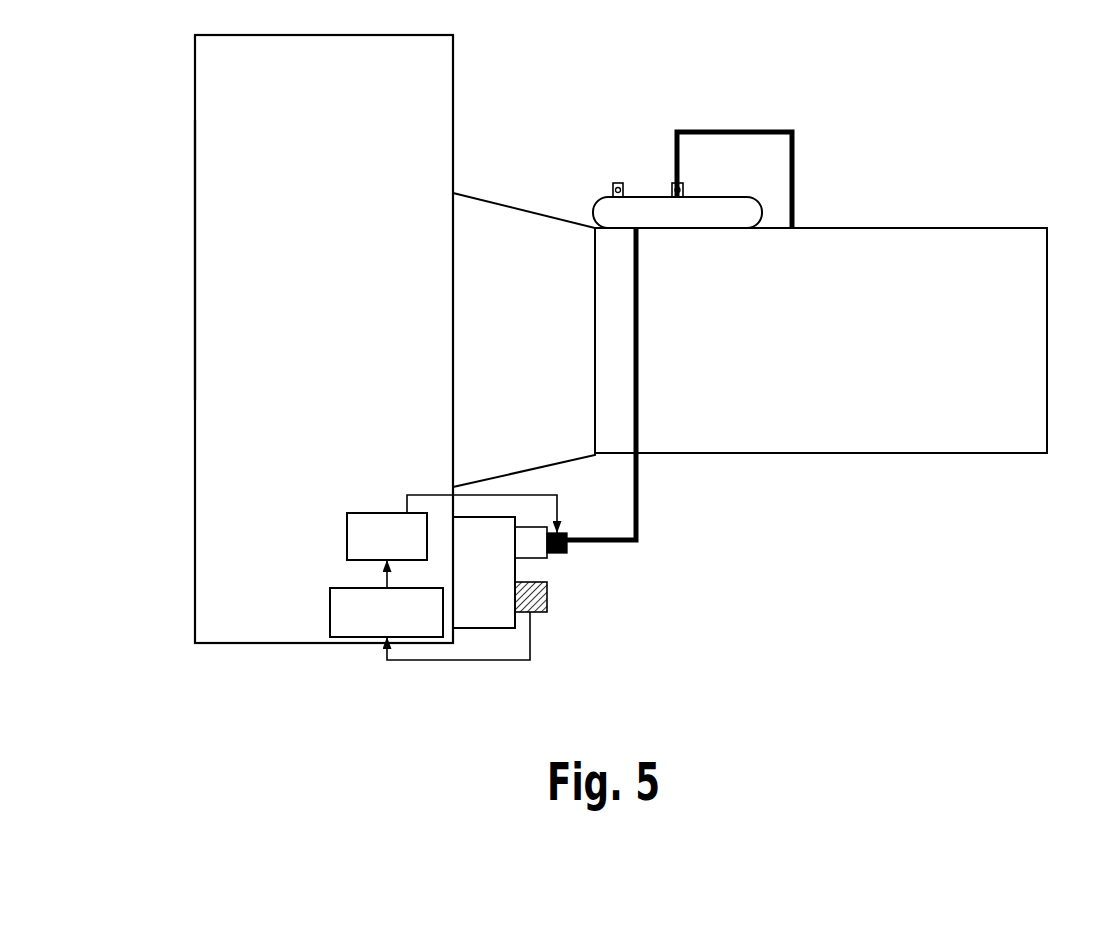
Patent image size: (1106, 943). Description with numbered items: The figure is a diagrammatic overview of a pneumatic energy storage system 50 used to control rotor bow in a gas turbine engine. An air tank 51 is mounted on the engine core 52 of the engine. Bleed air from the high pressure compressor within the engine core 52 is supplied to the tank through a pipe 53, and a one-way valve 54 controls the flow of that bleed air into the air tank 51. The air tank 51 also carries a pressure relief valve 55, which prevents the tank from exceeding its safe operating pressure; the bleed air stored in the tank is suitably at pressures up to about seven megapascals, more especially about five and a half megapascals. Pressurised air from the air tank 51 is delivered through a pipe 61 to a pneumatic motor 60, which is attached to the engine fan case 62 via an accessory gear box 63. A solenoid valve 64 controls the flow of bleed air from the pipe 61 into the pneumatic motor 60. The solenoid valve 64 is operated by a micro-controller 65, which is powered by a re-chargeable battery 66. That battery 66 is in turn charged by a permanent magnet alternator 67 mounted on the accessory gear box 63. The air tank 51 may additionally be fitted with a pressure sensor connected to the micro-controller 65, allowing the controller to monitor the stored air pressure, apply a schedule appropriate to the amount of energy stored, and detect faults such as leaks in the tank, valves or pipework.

The pneumatic energy storage system 50 is at (172, 158).
The air tank 51 is at (588, 210).
The engine core 52 is at (1003, 226).
The pipe 53 is at (730, 125).
The one-way valve 54 is at (672, 180).
The pressure relief valve 55 is at (607, 180).
The pneumatic motor 60 is at (543, 565).
The pipe 61 is at (642, 478).
The engine fan case 62 is at (190, 300).
The accessory gear box 63 is at (471, 632).
The solenoid valve 64 is at (575, 557).
The micro-controller 65 is at (347, 533).
The re-chargeable battery 66 is at (330, 607).
The permanent magnet alternator 67 is at (543, 617).